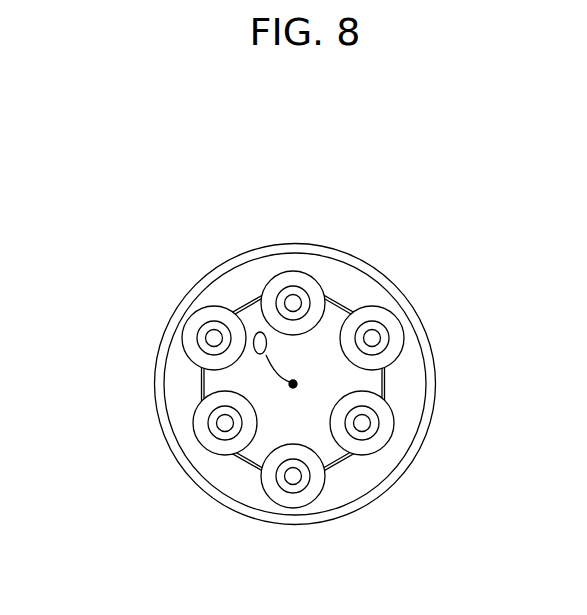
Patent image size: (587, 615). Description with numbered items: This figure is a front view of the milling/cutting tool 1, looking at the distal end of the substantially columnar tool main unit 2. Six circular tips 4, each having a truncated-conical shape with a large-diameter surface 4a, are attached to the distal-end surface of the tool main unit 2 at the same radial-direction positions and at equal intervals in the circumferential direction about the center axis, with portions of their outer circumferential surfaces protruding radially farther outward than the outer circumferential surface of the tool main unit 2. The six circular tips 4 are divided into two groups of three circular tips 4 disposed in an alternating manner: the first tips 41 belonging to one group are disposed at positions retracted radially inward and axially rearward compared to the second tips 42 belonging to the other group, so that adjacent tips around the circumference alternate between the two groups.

The milling/cutting tool 1 is at (136, 182).
The tool main unit 2 is at (152, 316).
The circular tips 4 is at (255, 264).
The first tips 41 is at (293, 271).
The second tips 42 is at (206, 309).
The large-diameter surface 4a is at (383, 316).